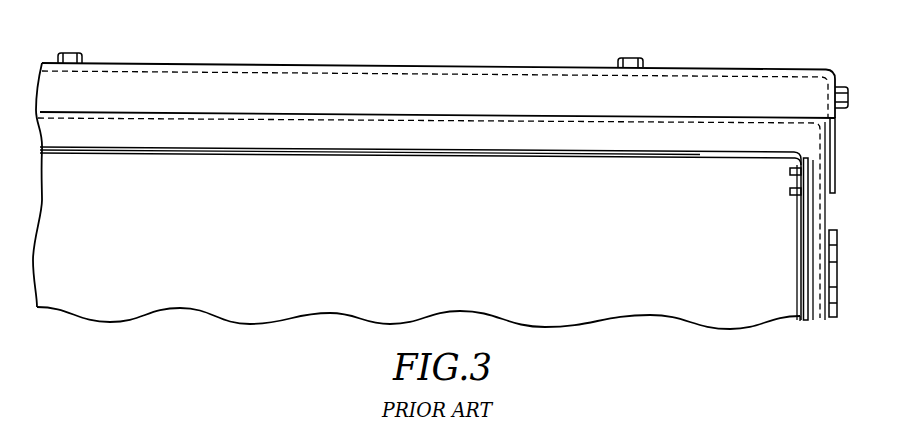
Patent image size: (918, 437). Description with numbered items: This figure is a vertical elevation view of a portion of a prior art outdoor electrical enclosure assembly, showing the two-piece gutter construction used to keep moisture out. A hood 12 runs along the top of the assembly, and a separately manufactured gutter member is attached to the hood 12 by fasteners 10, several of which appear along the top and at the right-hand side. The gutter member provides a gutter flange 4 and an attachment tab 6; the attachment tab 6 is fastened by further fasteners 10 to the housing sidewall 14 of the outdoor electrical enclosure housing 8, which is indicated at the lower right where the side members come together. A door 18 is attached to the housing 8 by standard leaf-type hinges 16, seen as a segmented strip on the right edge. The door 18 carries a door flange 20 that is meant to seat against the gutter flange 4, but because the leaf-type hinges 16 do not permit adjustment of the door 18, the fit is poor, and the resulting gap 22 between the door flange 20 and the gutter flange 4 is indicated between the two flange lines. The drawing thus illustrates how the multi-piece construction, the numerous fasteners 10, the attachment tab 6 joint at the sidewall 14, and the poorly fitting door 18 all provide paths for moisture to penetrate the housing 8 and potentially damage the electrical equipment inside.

The gutter flange 4 is at (278, 148).
The attachment tab 6 is at (792, 193).
The outdoor electrical enclosure housing 8 is at (798, 328).
The fasteners 10 is at (72, 53).
The hood 12 is at (758, 67).
The housing sidewall 14 is at (800, 215).
The leaf-type hinges 16 is at (838, 267).
The door 18 is at (168, 112).
The door flange 20 is at (226, 120).
The gap 22 is at (328, 138).